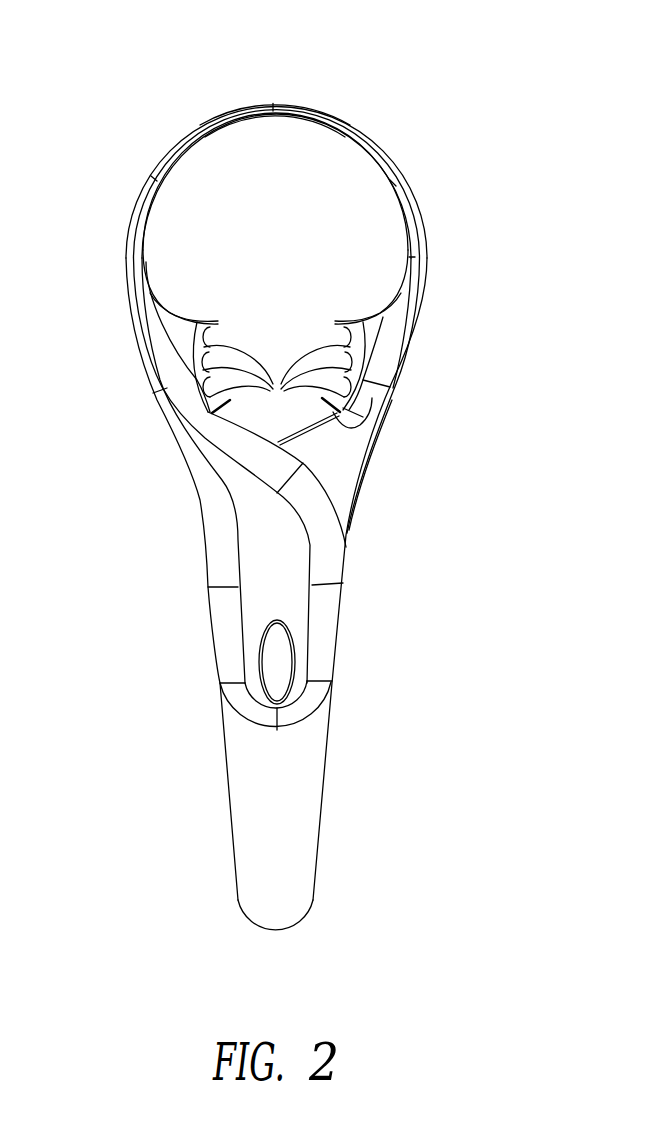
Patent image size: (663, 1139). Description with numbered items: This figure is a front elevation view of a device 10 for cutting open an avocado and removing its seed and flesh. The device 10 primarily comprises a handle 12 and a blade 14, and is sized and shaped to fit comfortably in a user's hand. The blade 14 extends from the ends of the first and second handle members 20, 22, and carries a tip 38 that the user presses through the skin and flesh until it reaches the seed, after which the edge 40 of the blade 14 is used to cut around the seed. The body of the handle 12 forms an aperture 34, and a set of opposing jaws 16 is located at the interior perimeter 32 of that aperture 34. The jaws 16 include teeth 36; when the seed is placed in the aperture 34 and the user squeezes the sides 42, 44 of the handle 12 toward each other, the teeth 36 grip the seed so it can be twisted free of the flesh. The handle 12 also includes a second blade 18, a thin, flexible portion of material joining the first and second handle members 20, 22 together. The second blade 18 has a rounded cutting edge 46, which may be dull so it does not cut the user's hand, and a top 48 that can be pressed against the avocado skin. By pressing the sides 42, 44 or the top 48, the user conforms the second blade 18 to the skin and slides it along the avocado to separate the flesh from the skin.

The device 10 is at (438, 128).
The handle 12 is at (433, 410).
The blade 14 is at (392, 822).
The jaws 16 is at (318, 333).
The second blade 18 is at (337, 83).
The first handle member 20 is at (348, 480).
The second handle member 22 is at (260, 570).
The interior perimeter 32 is at (145, 242).
The aperture 34 is at (352, 254).
The teeth 36 is at (282, 375).
The tip 38 is at (276, 930).
The edge 40 is at (318, 840).
The side 42 is at (440, 280).
The side 44 is at (108, 303).
The cutting edge 46 is at (262, 115).
The top 48 is at (295, 103).